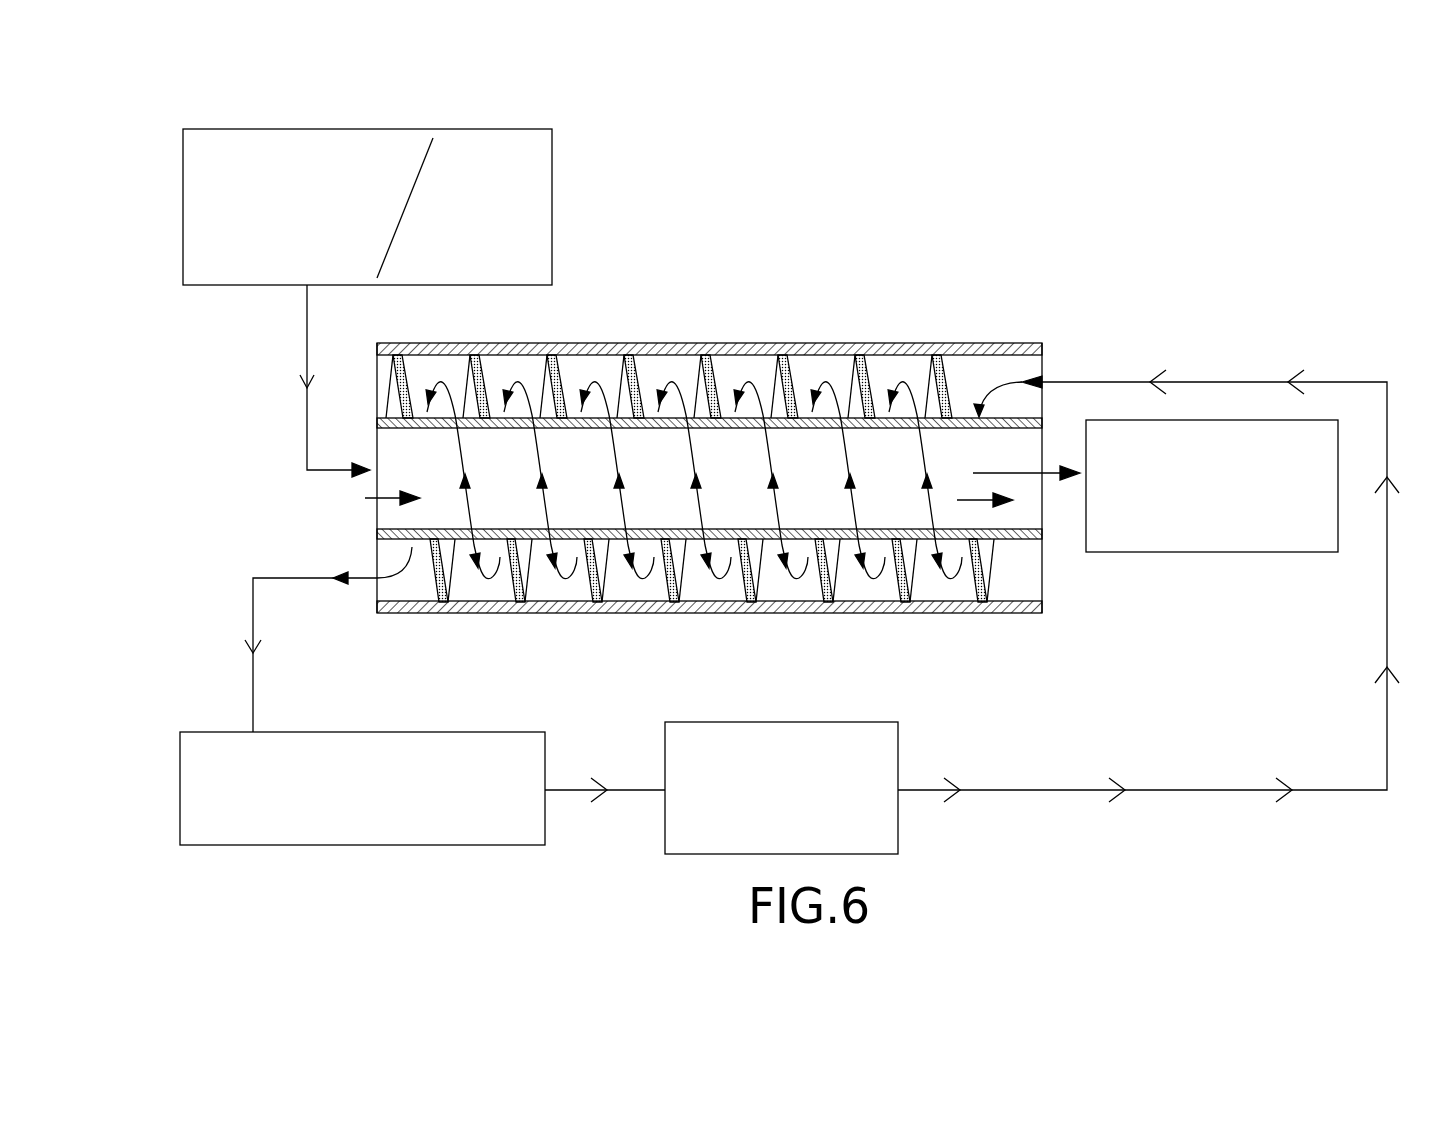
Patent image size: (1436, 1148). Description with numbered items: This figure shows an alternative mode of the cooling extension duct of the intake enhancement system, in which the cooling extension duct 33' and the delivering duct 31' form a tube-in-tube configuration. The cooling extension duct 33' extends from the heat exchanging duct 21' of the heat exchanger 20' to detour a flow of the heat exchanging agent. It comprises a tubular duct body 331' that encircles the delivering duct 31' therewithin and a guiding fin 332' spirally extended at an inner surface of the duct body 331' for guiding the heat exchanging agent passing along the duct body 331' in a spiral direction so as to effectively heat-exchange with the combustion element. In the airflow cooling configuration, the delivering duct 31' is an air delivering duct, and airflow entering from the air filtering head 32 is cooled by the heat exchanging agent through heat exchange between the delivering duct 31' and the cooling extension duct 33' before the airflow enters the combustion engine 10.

The combustion engine 10 is at (1212, 486).
The heat exchanger 20' is at (781, 788).
The heat exchanging duct 21' is at (362, 788).
The delivering duct 31' is at (809, 634).
The air filtering head 32 is at (367, 207).
The cooling extension duct 33' is at (782, 410).
The duct body 331' is at (709, 412).
The guiding fin 332' is at (669, 274).